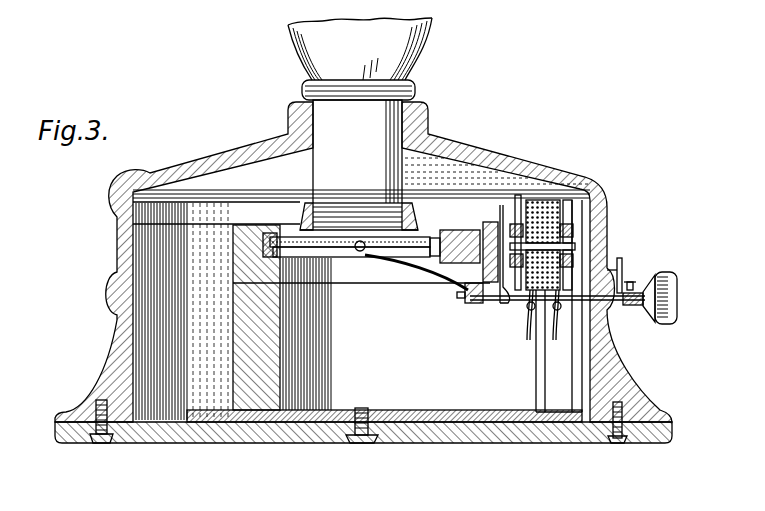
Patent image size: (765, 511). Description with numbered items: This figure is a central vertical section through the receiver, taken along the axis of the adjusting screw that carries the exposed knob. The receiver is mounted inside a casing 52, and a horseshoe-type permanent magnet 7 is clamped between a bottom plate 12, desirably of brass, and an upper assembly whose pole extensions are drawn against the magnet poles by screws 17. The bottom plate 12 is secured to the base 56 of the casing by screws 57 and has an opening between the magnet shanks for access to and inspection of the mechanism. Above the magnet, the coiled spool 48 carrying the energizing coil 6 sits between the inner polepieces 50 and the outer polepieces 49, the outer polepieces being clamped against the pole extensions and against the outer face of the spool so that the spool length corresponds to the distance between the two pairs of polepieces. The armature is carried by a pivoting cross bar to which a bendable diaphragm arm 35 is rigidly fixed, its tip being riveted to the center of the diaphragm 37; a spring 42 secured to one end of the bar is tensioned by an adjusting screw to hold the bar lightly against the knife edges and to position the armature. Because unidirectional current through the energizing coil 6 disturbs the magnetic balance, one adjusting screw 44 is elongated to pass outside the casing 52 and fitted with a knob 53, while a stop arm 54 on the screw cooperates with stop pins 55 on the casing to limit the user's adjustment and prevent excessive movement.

The casing 52 is at (127, 212).
The outer polepieces 49 is at (606, 200).
The inner polepieces 50 is at (518, 205).
The energizing coil 6 is at (535, 207).
The coiled spool 48 is at (563, 222).
The stop arm 54 is at (619, 270).
The stop pins 55 is at (630, 278).
The knob 53 is at (672, 290).
The diaphragm 37 is at (333, 250).
The diaphragm arm 35 is at (424, 265).
The adjusting screw 44 is at (493, 295).
The spring 42 is at (524, 300).
The permanent magnet 7 is at (398, 372).
The screws 17 is at (538, 380).
The base 56 is at (188, 436).
The screws 57 is at (364, 438).
The bottom plate 12 is at (458, 418).